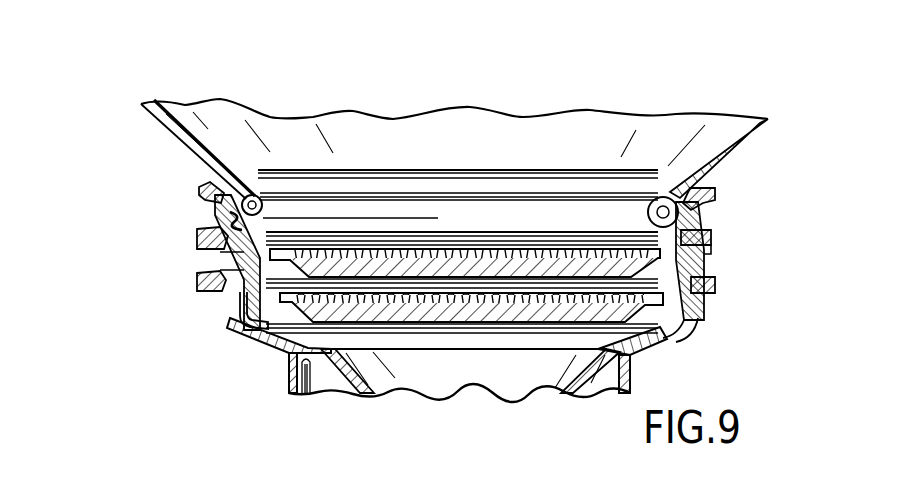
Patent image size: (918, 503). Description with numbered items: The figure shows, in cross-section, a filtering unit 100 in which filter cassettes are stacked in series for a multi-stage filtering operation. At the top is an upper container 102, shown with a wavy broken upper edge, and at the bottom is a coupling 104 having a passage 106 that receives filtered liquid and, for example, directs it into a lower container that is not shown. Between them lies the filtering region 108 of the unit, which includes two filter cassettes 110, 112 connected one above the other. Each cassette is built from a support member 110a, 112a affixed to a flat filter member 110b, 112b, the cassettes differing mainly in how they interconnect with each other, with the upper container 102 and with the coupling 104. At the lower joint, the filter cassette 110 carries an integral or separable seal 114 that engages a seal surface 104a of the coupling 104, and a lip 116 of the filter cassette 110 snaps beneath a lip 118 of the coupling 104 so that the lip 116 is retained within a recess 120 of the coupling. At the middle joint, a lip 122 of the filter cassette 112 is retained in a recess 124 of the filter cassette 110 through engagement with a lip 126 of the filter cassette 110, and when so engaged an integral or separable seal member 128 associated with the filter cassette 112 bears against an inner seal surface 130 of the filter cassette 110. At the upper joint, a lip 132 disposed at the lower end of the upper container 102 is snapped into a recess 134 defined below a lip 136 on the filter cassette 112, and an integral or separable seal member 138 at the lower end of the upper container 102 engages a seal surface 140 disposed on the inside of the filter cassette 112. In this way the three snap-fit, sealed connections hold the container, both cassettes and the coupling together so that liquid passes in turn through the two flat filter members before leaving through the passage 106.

The filtering unit 100 is at (190, 72).
The upper container 102 is at (516, 144).
The coupling 104 is at (226, 326).
The seal surface 104a is at (652, 340).
The passage 106 is at (447, 366).
The filtering region 108 is at (126, 285).
The filter cassette 110 is at (517, 305).
The support member 110a is at (350, 312).
The flat filter member 110b is at (363, 283).
The filter cassette 112 is at (548, 250).
The support member 112a is at (415, 272).
The flat filter member 112b is at (461, 257).
The seal 114 is at (226, 315).
The lip 116 is at (228, 296).
The lip 118 is at (222, 272).
The recess 120 is at (700, 300).
The lip 122 is at (703, 251).
The recess 124 is at (706, 242).
The lip 126 is at (703, 222).
The seal member 128 is at (205, 255).
The inner seal surface 130 is at (645, 262).
The lip 132 is at (216, 190).
The recess 134 is at (222, 205).
The lip 136 is at (232, 170).
The seal member 138 is at (255, 213).
The seal surface 140 is at (652, 226).